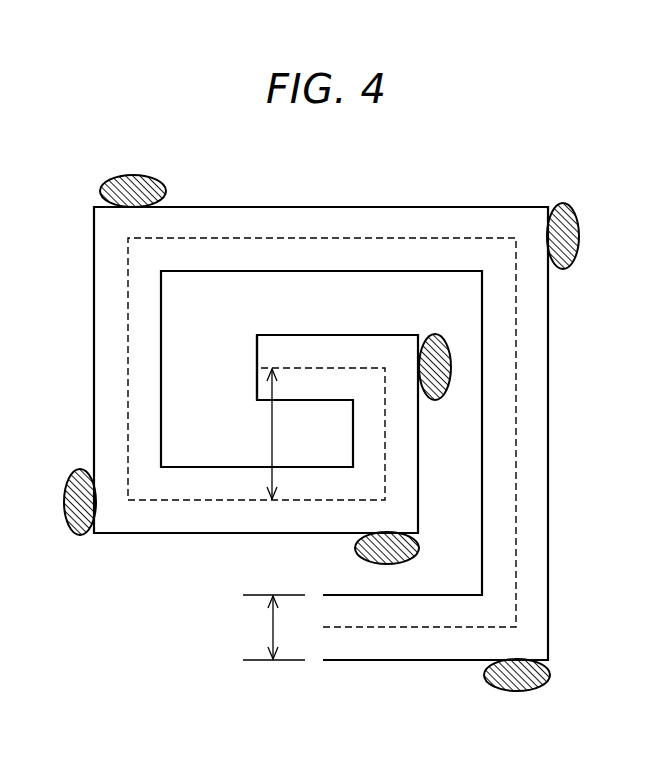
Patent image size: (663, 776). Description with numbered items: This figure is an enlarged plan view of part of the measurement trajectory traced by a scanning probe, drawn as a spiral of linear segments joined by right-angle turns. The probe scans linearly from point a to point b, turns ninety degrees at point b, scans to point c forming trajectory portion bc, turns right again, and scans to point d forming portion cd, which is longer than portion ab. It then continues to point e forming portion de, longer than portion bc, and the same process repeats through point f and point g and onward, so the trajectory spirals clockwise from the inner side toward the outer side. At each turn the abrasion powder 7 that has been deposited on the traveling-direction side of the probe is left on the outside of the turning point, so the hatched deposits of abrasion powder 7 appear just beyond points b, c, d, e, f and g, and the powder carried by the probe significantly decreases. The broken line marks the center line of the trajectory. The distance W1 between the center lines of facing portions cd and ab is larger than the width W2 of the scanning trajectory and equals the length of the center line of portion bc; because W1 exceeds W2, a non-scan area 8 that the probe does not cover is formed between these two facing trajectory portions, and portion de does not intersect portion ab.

The abrasion powder 7 is at (312, 436).
The non-scan area 8 is at (312, 430).
The point a is at (243, 367).
The point b is at (425, 347).
The point c is at (401, 536).
The point d is at (66, 502).
The point e is at (133, 177).
The point f is at (573, 236).
The point g is at (517, 692).
The distance between facing measurement trajectory portions W1 is at (257, 434).
The width of the scanning trajectory W2 is at (272, 627).